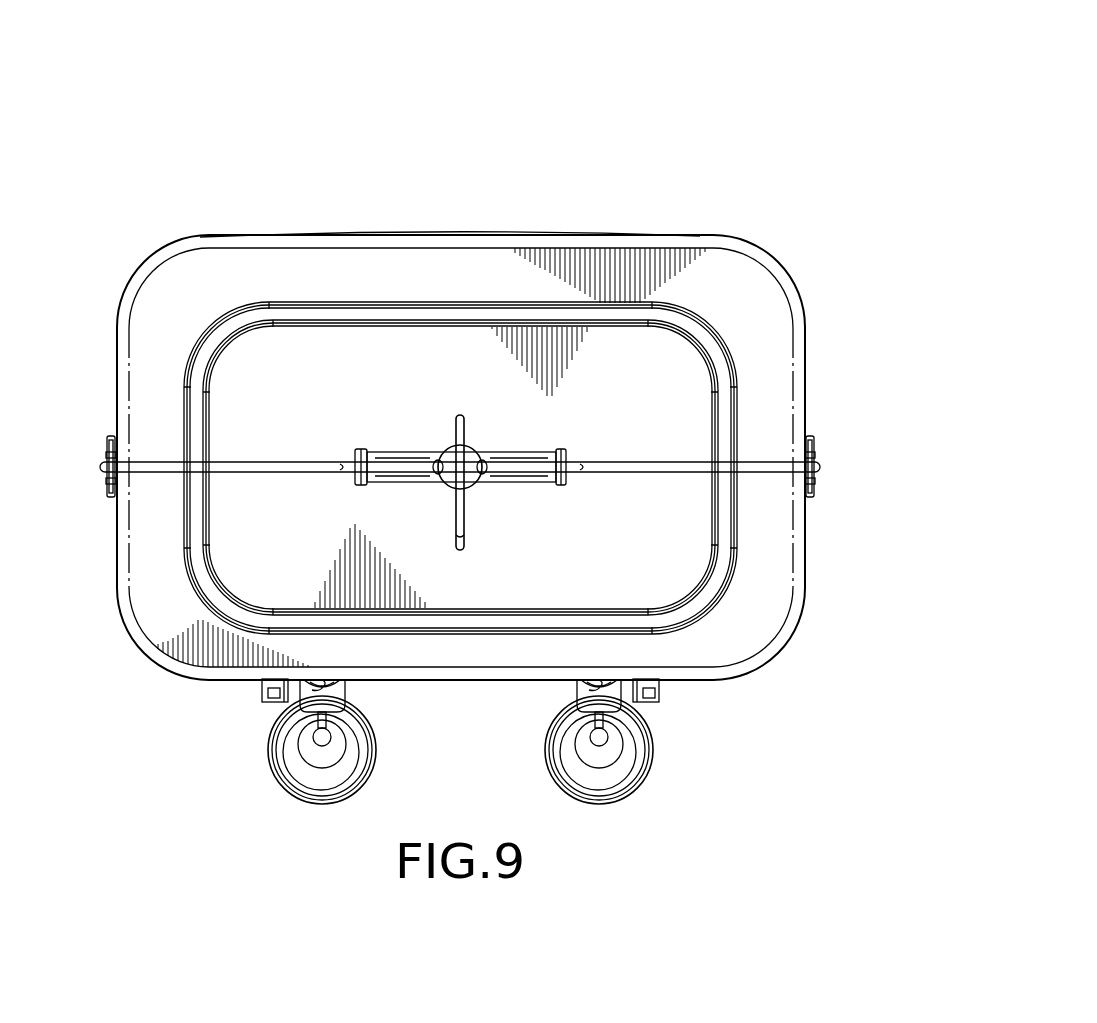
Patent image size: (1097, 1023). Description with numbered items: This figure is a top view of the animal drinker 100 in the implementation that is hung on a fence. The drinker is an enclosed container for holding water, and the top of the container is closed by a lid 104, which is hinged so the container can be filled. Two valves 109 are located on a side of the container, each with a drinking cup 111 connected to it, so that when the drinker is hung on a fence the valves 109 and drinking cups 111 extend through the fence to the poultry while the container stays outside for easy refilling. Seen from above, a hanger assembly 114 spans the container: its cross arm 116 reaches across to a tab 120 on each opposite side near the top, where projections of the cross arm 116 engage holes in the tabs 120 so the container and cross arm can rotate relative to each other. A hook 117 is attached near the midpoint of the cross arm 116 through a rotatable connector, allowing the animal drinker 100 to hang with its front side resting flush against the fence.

The animal drinker 100 is at (461, 423).
The lid 104 is at (731, 265).
The valve 109 is at (335, 737).
The drinking cup 111 is at (282, 777).
The hanger assembly 114 is at (494, 454).
The cross arm 116 is at (760, 466).
The hook 117 is at (453, 433).
The tab 120 is at (108, 440).